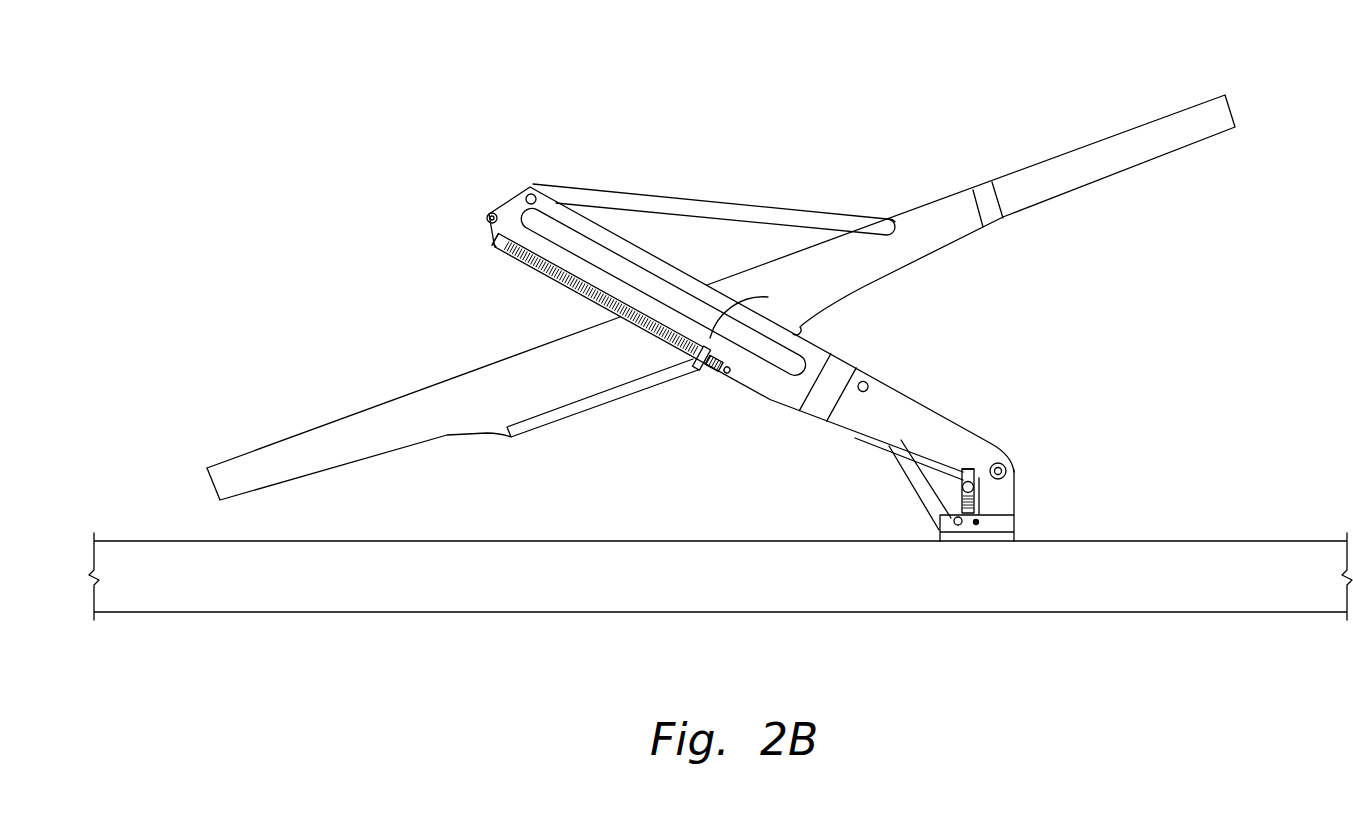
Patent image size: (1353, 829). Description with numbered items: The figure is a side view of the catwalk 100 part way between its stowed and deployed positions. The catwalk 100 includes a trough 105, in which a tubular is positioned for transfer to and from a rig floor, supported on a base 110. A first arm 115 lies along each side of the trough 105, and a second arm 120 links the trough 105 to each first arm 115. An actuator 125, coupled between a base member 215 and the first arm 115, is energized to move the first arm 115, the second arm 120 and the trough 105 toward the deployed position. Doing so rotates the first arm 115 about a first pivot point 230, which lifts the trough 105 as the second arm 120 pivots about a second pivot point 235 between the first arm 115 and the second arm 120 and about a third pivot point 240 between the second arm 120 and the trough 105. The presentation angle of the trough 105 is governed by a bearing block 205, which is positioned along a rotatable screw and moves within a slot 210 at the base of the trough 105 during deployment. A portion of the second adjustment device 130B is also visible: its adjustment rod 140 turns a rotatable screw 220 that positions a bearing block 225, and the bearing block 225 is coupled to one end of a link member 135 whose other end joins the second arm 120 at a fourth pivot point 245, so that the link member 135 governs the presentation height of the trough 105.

The catwalk 100 is at (348, 93).
The trough 105 is at (1228, 112).
The base 110 is at (1276, 540).
The first arm 115 is at (707, 305).
The second arm 120 is at (705, 200).
The actuator 125 is at (933, 489).
The second adjustment device 130B is at (986, 509).
The link member 135 is at (493, 244).
The adjustment rod 140 is at (979, 530).
The bearing block 205 is at (717, 332).
The slot 210 is at (560, 414).
The base member 215 is at (1000, 488).
The rotatable screw 220 is at (969, 473).
The bearing block 225 is at (974, 494).
The first pivot point 230 is at (1006, 461).
The second pivot point 235 is at (531, 186).
The third pivot point 240 is at (889, 216).
The fourth pivot point 245 is at (486, 213).